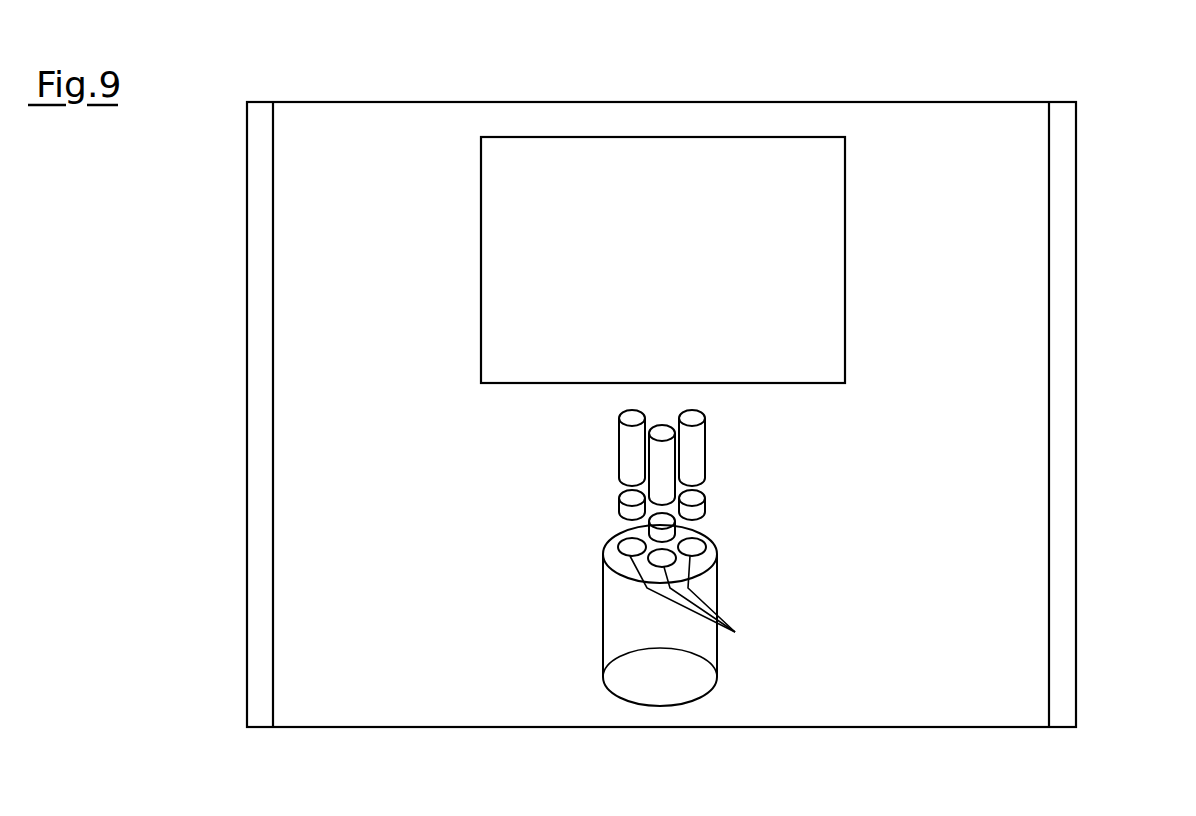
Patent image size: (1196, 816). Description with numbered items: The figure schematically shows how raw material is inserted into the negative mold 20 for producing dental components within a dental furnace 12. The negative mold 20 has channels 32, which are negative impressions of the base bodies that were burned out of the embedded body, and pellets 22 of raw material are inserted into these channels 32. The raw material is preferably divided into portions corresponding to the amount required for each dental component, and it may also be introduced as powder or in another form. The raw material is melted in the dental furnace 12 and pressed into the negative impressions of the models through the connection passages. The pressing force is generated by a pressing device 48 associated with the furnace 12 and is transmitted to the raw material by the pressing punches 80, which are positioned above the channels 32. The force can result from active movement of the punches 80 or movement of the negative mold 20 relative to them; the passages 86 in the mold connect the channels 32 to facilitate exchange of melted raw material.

The dental furnace 12 is at (1077, 164).
The pressing device 48 is at (846, 281).
The pressing punches 80 is at (706, 442).
The pellets of raw material 22 is at (706, 505).
The negative mold 20 is at (713, 583).
The channels 32 is at (676, 539).
The channels 86 is at (699, 603).